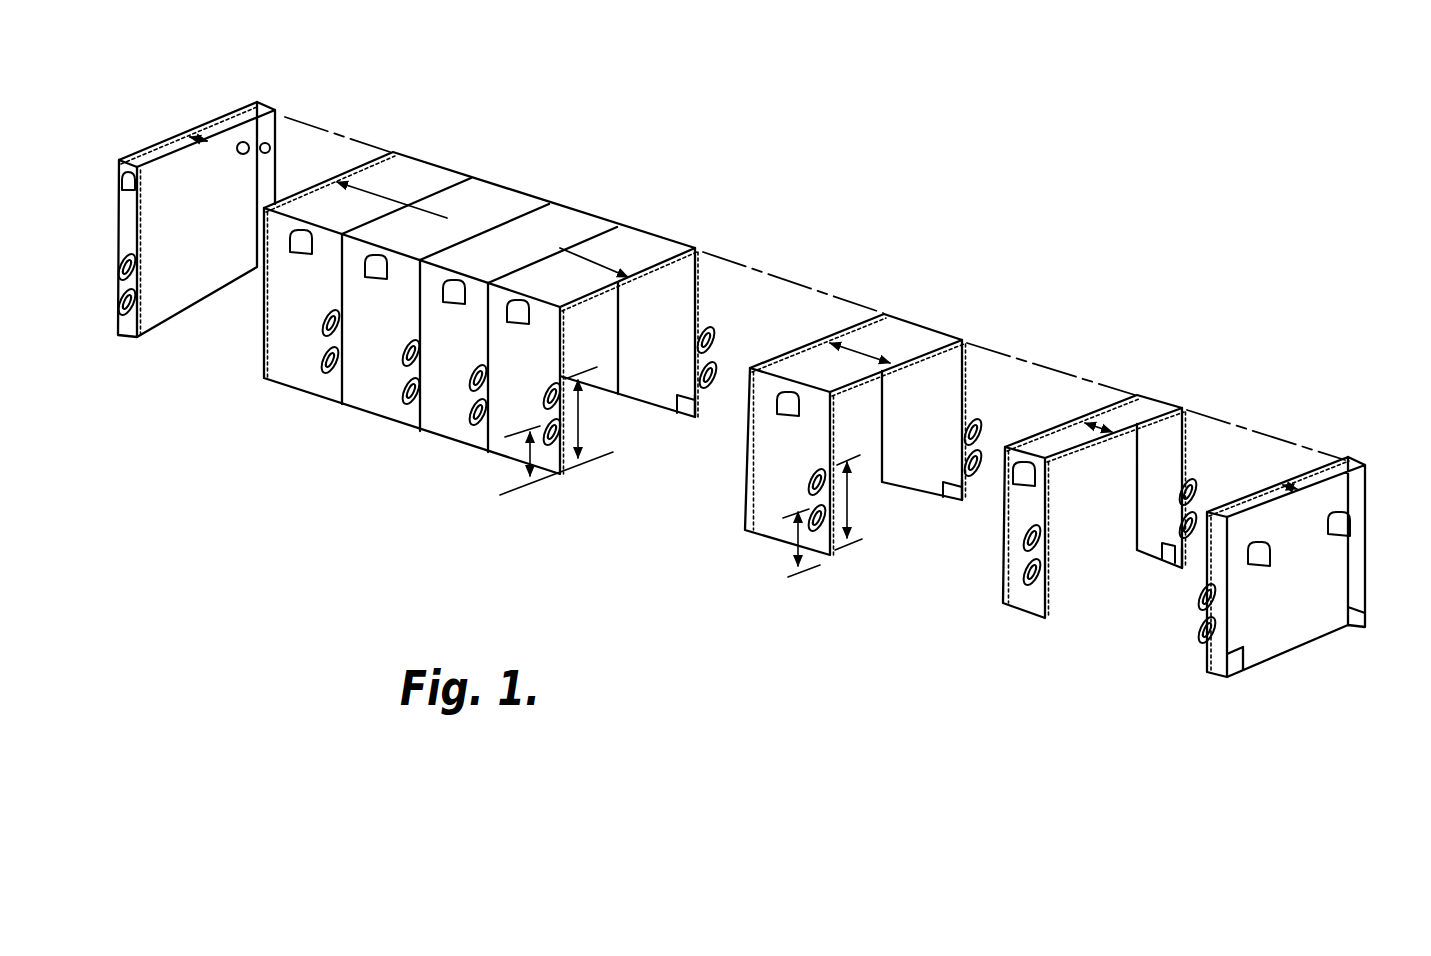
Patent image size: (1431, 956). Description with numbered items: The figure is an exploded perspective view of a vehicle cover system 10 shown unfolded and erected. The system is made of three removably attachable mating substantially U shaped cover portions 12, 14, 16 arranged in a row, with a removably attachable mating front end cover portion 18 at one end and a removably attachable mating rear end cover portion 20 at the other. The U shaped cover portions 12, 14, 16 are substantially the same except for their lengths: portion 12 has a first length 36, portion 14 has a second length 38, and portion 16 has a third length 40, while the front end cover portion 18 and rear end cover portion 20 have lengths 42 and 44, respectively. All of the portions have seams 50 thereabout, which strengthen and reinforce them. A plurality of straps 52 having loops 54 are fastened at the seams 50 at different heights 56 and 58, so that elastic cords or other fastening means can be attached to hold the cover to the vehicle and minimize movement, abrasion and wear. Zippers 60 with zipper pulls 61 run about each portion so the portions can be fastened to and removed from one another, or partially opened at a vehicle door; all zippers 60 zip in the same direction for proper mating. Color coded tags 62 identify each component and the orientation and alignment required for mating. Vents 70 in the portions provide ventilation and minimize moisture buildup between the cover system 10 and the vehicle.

The vehicle cover system 10 is at (806, 186).
The removably attachable mating substantially U shaped cover portion 12 is at (598, 242).
The removably attachable mating substantially U shaped cover portion 14 is at (962, 340).
The removably attachable mating substantially U shaped cover portion 16 is at (1182, 408).
The removably attachable mating front end cover portion 18 is at (1352, 455).
The removably attachable mating rear end cover portion 20 is at (262, 100).
The first length 36 is at (470, 218).
The second length 38 is at (905, 340).
The third length 40 is at (1150, 396).
The length 42 is at (1340, 460).
The length 44 is at (205, 130).
The seams 50 is at (447, 178).
The straps 52 is at (135, 293).
The loops 54 is at (420, 355).
The height 56 is at (545, 468).
The height 58 is at (582, 428).
The zippers 60 is at (182, 152).
The zipper pulls 61 is at (698, 400).
The color coded tags 62 is at (690, 420).
The vents 70 is at (243, 143).